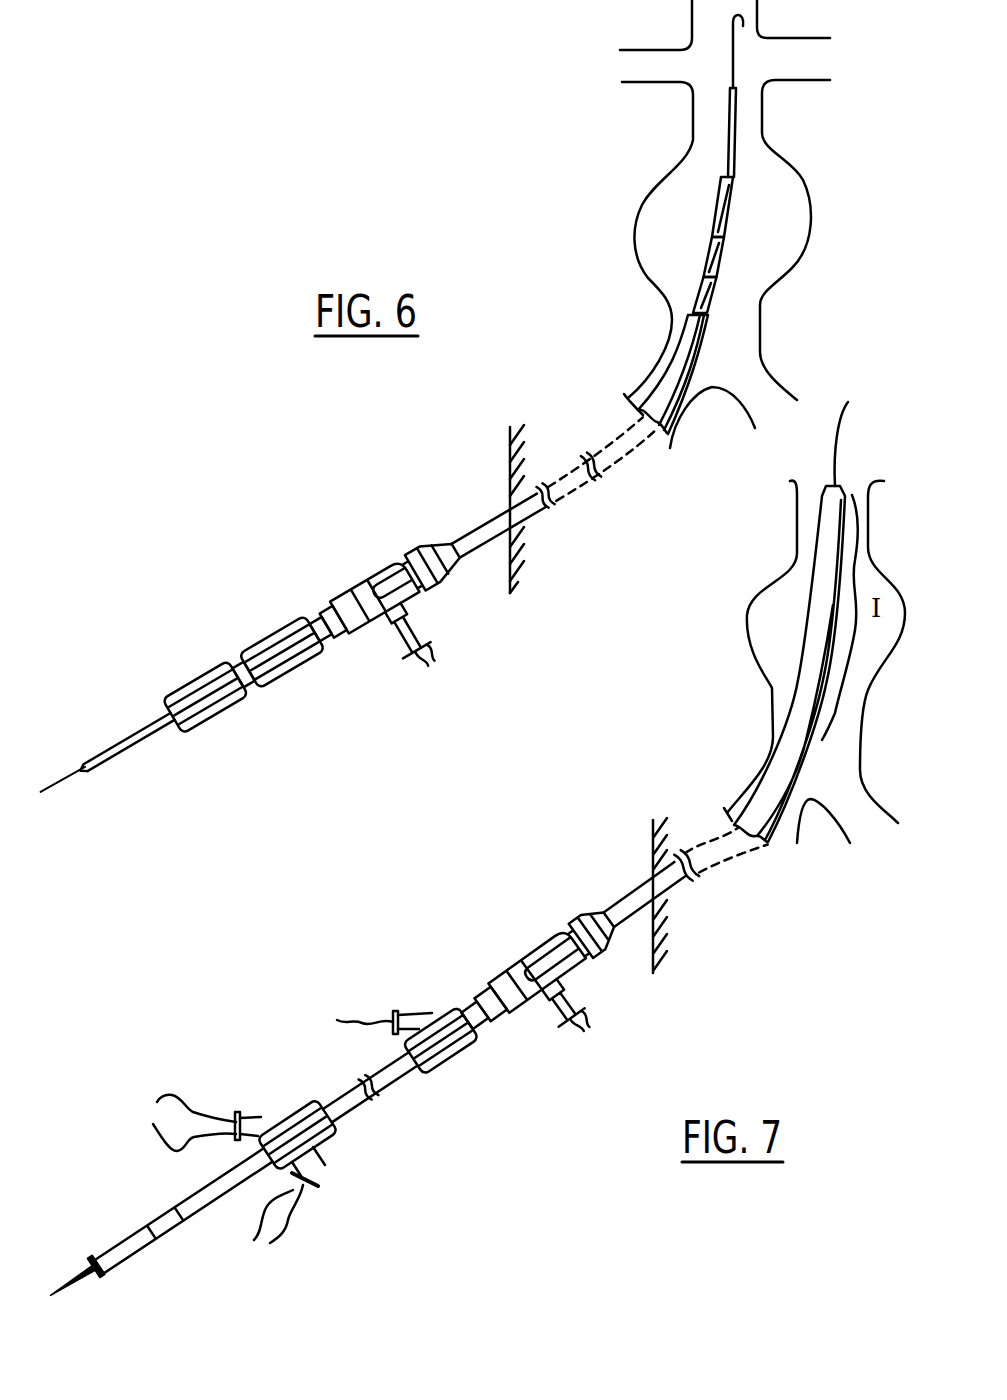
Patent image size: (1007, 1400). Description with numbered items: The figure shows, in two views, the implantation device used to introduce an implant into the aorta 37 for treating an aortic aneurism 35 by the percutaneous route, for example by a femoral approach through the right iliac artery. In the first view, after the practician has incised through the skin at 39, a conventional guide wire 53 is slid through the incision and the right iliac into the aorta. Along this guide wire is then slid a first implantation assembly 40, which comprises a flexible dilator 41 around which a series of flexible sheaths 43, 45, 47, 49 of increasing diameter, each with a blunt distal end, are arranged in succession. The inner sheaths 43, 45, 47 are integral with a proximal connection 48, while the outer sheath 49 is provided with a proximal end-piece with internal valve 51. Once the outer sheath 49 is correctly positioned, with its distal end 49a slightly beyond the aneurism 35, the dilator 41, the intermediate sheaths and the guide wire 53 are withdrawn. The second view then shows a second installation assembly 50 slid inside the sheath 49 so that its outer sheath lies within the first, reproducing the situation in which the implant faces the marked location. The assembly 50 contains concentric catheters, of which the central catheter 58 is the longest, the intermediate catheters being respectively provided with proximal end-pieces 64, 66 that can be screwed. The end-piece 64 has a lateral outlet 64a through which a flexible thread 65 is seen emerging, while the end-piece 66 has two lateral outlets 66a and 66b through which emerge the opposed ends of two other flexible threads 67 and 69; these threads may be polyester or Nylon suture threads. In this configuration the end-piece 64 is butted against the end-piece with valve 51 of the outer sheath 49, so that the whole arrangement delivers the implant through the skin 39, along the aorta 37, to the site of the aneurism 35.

In FIG. 6, the aortic aneurism 35 is at (827, 150).
In FIG. 7, the aortic aneurism 35 is at (712, 552).
In FIG. 6, the aorta 37 is at (692, 131).
In FIG. 6, the skin incision 39 is at (508, 513).
In FIG. 6, the first implantation assembly 40 is at (375, 633).
In FIG. 7, the first implantation assembly 40 is at (613, 958).
In FIG. 6, the flexible dilator 41 is at (735, 140).
In FIG. 6, the flexible sheath 43 is at (715, 212).
In FIG. 6, the flexible sheath 45 is at (711, 253).
In FIG. 6, the flexible sheath 47 is at (710, 302).
In FIG. 6, the proximal connection 48 is at (238, 662).
In FIG. 6, the outer sheath 49 is at (670, 385).
In FIG. 7, the outer sheath 49 is at (800, 771).
In FIG. 7, the distal end of outer sheath 49a is at (830, 510).
In FIG. 7, the second installation assembly 50 is at (421, 1105).
In FIG. 6, the proximal end-piece with internal valve 51 is at (343, 593).
In FIG. 7, the proximal end-piece with internal valve 51 is at (523, 1004).
In FIG. 6, the guide wire 53 is at (733, 58).
In FIG. 7, the guide wire 53 is at (843, 453).
In FIG. 7, the central catheter 58 is at (130, 1241).
In FIG. 7, the proximal end-piece 64 is at (463, 1050).
In FIG. 7, the lateral outlet 64a is at (422, 1015).
In FIG. 7, the flexible thread 65 is at (352, 1019).
In FIG. 7, the proximal end-piece 66 is at (293, 1108).
In FIG. 7, the lateral outlet 66a is at (254, 1117).
In FIG. 7, the lateral outlet 66b is at (320, 1168).
In FIG. 7, the flexible thread 67 is at (180, 1122).
In FIG. 7, the flexible thread 69 is at (268, 1229).